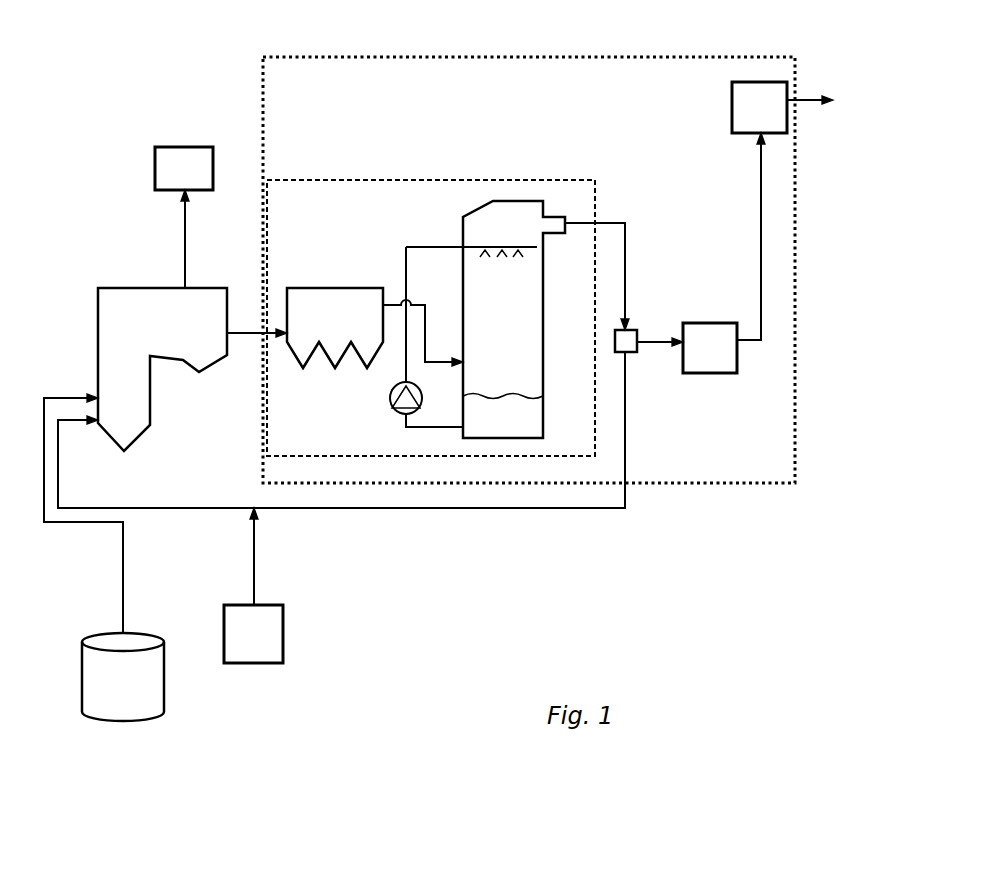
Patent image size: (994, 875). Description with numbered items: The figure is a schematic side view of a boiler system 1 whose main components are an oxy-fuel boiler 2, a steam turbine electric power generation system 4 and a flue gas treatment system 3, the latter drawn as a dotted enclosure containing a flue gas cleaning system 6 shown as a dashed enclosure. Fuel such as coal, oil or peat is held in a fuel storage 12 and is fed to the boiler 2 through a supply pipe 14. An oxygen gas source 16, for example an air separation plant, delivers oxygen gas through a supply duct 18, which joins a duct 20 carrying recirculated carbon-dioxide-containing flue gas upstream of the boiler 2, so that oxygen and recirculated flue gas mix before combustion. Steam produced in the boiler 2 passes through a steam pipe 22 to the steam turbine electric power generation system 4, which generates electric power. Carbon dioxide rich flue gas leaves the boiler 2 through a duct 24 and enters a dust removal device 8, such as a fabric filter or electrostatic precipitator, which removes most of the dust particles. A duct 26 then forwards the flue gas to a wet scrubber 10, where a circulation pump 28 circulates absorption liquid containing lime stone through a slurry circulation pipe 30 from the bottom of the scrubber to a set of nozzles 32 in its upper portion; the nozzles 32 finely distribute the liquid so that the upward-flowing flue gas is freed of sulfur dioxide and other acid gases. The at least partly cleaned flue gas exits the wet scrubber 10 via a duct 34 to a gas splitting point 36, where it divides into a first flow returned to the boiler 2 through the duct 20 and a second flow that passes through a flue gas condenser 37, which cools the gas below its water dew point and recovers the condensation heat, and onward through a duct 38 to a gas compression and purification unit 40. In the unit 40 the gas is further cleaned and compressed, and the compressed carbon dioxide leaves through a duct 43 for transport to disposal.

The boiler system 1 is at (172, 90).
The boiler 2 is at (113, 357).
The flue gas treatment system 3 is at (390, 55).
The steam turbine electric power generation system 4 is at (155, 170).
The flue gas cleaning system 6 is at (437, 175).
The dust removal device 8 is at (312, 288).
The wet scrubber 10 is at (530, 199).
The fuel storage 12 is at (152, 690).
The supply pipe 14 is at (123, 540).
The oxygen gas source 16 is at (270, 635).
The supply duct 18 is at (255, 557).
The duct 20 is at (368, 510).
The steam pipe 22 is at (185, 245).
The duct 24 is at (250, 336).
The duct 26 is at (400, 305).
The circulation pump 28 is at (390, 398).
The slurry circulation pipe 30 is at (430, 247).
The nozzles 32 is at (520, 250).
The duct 34 is at (628, 257).
The gas splitting point 36 is at (632, 353).
The flue gas condenser 37 is at (718, 374).
The duct 38 is at (757, 197).
The gas compression and purification unit 40 is at (732, 90).
The duct 43 is at (805, 96).